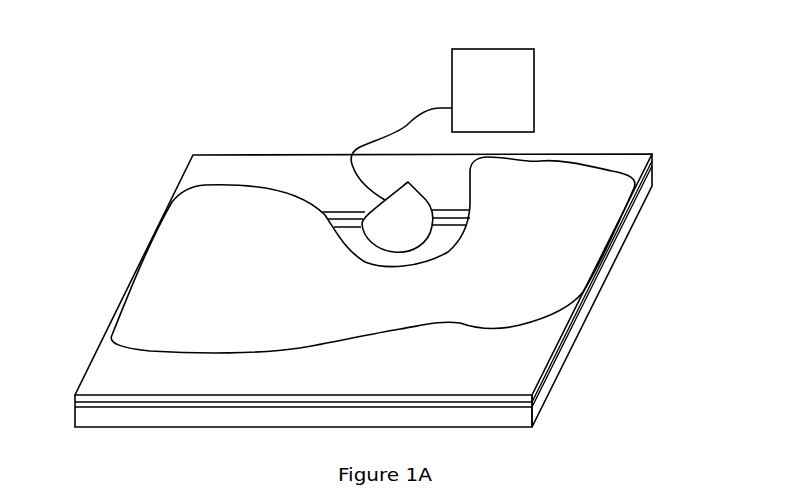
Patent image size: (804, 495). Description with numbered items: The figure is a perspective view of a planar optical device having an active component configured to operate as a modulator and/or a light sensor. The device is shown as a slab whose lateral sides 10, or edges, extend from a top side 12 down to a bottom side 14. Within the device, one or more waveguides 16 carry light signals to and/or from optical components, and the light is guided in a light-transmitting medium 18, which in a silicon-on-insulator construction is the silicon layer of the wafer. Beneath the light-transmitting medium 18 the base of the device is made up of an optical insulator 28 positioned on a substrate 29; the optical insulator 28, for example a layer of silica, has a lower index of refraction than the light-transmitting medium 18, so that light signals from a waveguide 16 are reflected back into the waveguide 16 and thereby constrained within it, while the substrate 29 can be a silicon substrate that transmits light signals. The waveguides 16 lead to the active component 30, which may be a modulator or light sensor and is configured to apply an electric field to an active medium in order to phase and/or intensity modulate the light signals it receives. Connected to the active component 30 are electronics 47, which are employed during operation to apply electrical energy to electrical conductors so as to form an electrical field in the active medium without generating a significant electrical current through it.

The lateral sides 10 is at (275, 352).
The top side 12 is at (233, 167).
The bottom side 14 is at (197, 428).
The waveguides 16 is at (335, 200).
The light-transmitting medium 18 is at (497, 396).
The optical insulator 28 is at (263, 405).
The substrate 29 is at (547, 390).
The active component 30 is at (384, 197).
The electronics 47 is at (518, 96).